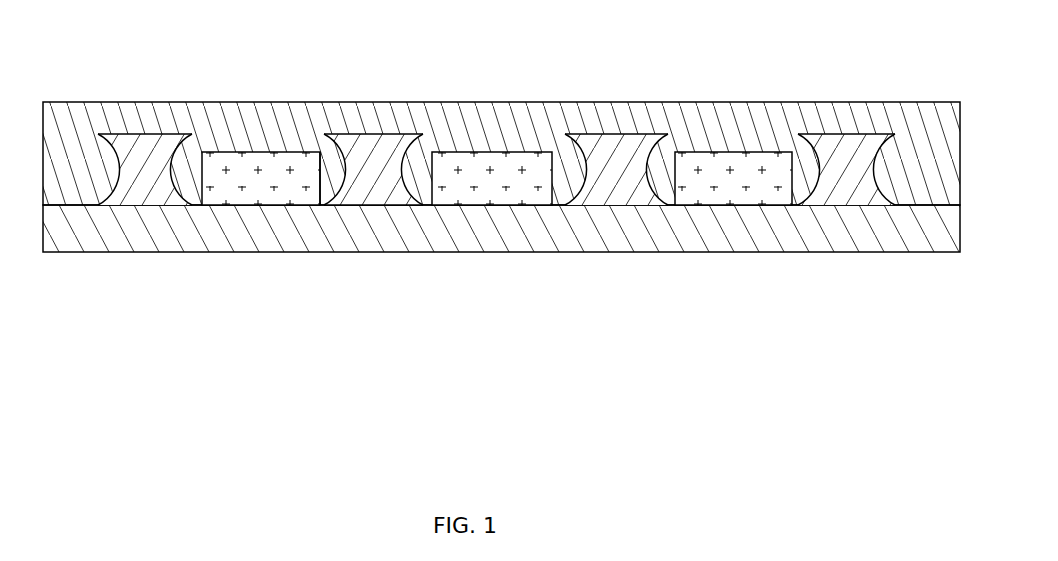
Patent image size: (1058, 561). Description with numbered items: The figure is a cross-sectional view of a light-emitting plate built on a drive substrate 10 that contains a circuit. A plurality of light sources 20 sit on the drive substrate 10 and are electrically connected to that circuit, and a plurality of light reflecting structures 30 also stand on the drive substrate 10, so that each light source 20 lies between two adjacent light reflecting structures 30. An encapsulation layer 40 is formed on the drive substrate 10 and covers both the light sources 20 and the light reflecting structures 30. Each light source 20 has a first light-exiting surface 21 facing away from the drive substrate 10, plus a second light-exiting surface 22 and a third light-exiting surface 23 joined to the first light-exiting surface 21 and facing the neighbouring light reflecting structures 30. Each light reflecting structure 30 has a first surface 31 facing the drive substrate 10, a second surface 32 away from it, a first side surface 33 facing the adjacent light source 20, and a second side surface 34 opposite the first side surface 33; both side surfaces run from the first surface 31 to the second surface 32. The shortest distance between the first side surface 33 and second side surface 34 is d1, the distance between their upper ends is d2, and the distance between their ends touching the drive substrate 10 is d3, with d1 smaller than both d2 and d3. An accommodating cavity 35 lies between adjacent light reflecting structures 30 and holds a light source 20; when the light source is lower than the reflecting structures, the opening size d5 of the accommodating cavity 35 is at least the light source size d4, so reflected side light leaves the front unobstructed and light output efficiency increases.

The drive substrate 10 is at (890, 240).
The light source 20 is at (98, 46).
The first light-exiting surface 21 is at (251, 150).
The second light-exiting surface 22 is at (196, 175).
The third light-exiting surface 23 is at (316, 158).
The light reflecting structure 30 is at (352, 245).
The first surface 31 is at (356, 208).
The second surface 32 is at (379, 138).
The first side surface 33 is at (343, 172).
The second side surface 34 is at (402, 169).
The accommodating cavity 35 is at (658, 182).
The encapsulation layer 40 is at (920, 167).
The shortest distance between first and second side surfaces d1 is at (172, 170).
The distance between upper ends of side surfaces d2 is at (423, 155).
The distance between lower ends of side surfaces d3 is at (98, 205).
The size of light source d4 is at (793, 205).
The size of cavity opening d5 is at (565, 155).